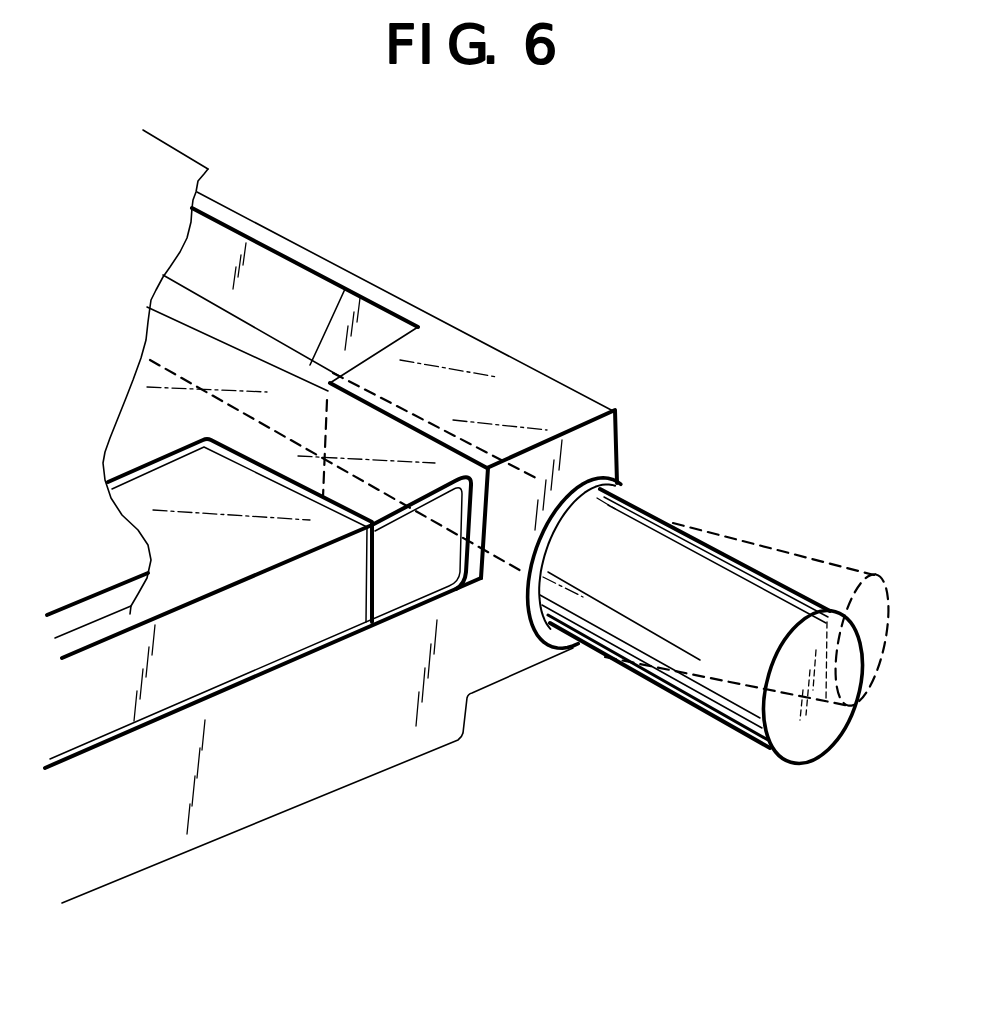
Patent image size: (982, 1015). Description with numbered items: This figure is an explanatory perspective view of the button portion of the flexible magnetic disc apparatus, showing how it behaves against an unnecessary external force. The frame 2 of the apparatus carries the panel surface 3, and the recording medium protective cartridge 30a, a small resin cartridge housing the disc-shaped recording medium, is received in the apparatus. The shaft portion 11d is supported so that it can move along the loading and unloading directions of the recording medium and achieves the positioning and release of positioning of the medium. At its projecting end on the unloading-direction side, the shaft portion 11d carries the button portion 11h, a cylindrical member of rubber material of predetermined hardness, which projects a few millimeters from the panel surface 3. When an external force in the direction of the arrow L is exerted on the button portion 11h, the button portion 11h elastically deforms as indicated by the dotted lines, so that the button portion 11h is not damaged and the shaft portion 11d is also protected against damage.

The frame 2 is at (545, 398).
The panel surface 3 is at (293, 773).
The shaft portion 11d is at (308, 367).
The button portion 11h is at (650, 535).
The recording medium protective cartridge 30a is at (298, 610).
The direction of external force L is at (700, 664).